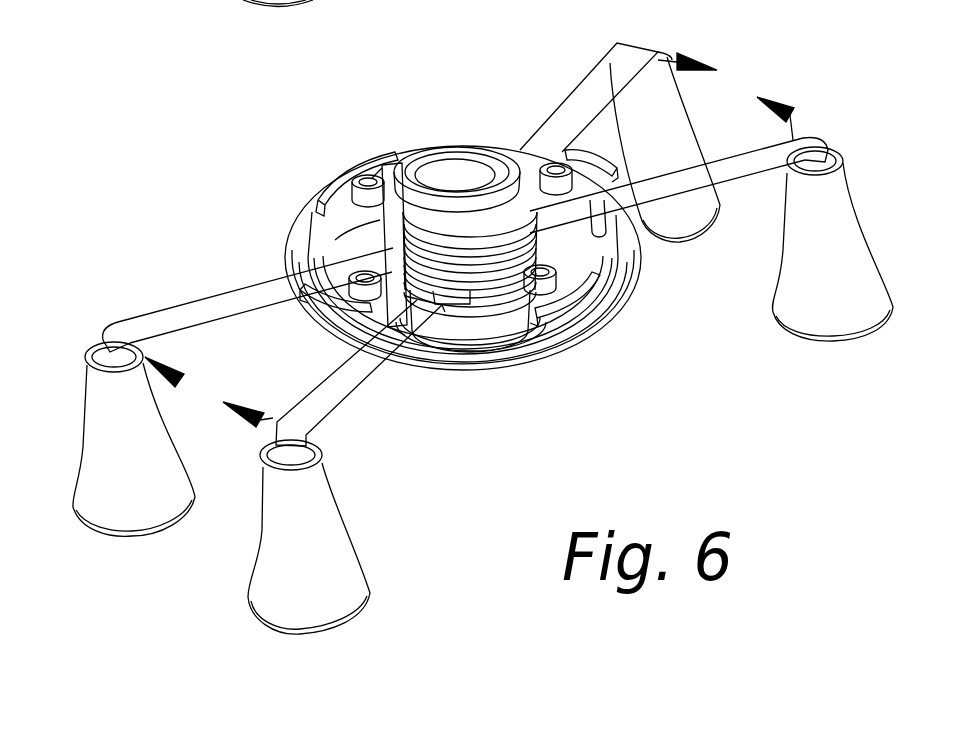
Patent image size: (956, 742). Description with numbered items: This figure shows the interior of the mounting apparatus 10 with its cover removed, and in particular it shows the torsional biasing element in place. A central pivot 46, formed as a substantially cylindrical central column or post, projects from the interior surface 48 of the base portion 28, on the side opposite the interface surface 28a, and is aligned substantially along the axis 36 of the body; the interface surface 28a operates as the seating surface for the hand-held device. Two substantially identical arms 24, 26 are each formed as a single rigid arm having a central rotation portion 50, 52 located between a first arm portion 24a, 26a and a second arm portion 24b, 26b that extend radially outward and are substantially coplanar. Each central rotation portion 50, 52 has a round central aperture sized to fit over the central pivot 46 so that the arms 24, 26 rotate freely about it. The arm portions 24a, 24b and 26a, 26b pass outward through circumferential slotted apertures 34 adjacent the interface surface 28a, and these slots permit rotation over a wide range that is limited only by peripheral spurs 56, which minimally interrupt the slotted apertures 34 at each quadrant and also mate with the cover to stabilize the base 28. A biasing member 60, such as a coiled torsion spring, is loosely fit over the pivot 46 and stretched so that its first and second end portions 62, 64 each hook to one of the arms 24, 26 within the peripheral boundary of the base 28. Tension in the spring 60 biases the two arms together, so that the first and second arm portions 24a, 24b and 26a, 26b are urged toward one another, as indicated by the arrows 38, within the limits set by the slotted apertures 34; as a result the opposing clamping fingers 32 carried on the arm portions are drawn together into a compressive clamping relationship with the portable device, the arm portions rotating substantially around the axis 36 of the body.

The mounting apparatus 10 is at (799, 49).
The arm 24 is at (439, 244).
The first arm portion 24a is at (327, 393).
The second arm portion 24b is at (557, 117).
The arm 26 is at (465, 218).
The first arm portion 26a is at (193, 308).
The second arm portion 26b is at (750, 157).
The base portion 28 is at (533, 341).
The interface surface 28a is at (573, 341).
The clamping finger 32 is at (483, 343).
The circumferential slotted aperture 34 is at (398, 162).
The axis 36 is at (455, 183).
The arrows 38 is at (488, 232).
The central pivot 46 is at (432, 150).
The interior surface 48 is at (340, 247).
The central rotation portion 50 is at (467, 300).
The central rotation portion 52 is at (537, 238).
The peripheral spur 56 is at (597, 157).
The biasing member 60 is at (493, 314).
The first end portion 62 is at (413, 342).
The second end portion 64 is at (610, 228).